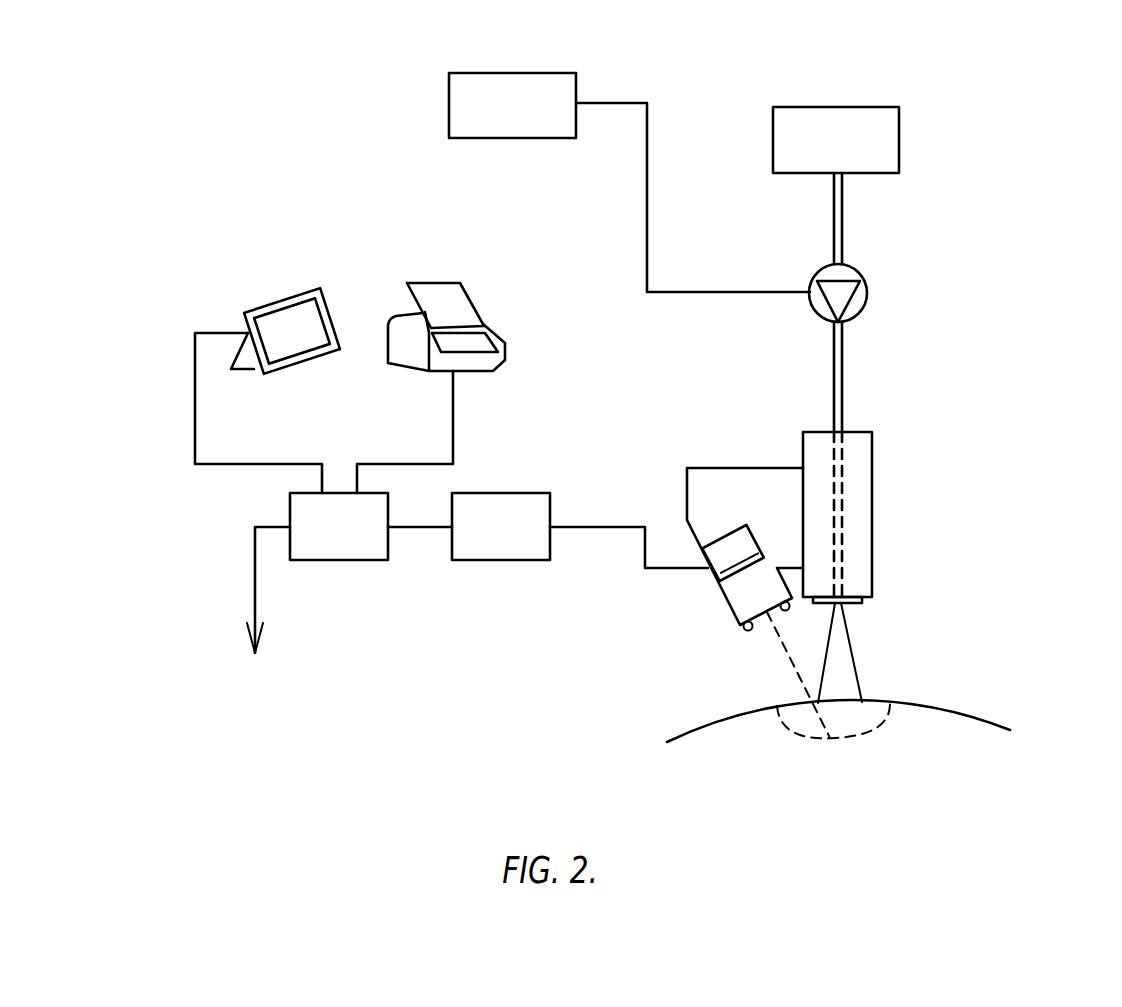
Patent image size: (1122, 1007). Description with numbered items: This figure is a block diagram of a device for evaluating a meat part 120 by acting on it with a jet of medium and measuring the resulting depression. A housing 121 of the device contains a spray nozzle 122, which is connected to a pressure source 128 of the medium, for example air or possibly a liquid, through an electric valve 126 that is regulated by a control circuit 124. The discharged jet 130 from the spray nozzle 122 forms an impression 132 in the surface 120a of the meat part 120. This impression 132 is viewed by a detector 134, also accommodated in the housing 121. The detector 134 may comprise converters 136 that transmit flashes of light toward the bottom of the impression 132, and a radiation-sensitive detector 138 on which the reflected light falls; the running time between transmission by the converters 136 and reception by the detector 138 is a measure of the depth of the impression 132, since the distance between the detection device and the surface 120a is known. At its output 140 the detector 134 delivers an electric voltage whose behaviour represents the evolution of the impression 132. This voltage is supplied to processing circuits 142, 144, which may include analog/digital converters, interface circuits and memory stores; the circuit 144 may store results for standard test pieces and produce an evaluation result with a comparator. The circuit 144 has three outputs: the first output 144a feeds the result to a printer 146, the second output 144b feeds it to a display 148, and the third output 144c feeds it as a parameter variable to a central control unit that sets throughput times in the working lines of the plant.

The meat part 120 is at (975, 769).
The surface of the meat part 120a is at (995, 720).
The housing 121 is at (863, 497).
The spray nozzle 122 is at (857, 601).
The control circuit 124 is at (509, 122).
The electric valve 126 is at (858, 303).
The pressure source 128 is at (890, 138).
The discharged jet 130 is at (858, 678).
The impression 132 is at (853, 723).
The detector 134 is at (730, 547).
The converters 136 is at (785, 611).
The radiation-sensitive detector 138 is at (732, 578).
The output of the detector 140 is at (700, 560).
The processing circuit 142 is at (497, 548).
The processing circuit 144 is at (337, 548).
The first output 144a is at (357, 492).
The second output 144b is at (317, 492).
The third output 144c is at (286, 525).
The printer 146 is at (498, 333).
The display 148 is at (282, 298).